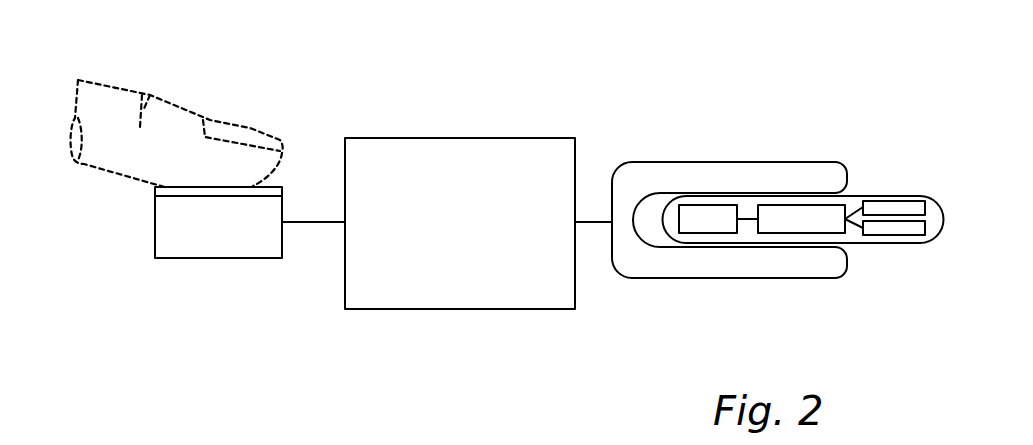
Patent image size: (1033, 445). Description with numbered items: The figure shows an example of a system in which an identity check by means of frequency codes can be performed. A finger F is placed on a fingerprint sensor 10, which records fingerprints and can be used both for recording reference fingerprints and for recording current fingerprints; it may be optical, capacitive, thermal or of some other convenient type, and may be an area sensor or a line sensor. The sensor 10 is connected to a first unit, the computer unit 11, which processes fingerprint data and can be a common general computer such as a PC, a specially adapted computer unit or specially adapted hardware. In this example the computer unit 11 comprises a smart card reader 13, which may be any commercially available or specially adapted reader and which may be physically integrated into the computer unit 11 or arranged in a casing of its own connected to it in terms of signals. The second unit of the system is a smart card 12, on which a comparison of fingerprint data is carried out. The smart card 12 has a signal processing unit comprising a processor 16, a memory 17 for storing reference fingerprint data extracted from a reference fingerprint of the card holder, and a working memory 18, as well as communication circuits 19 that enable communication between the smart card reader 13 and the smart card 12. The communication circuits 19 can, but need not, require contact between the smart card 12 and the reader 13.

The finger F is at (247, 137).
The fingerprint sensor 10 is at (230, 238).
The computer unit 11 is at (523, 153).
The smart card 12 is at (855, 237).
The smart card reader 13 is at (732, 168).
The processor 16 is at (808, 222).
The memory 17 is at (895, 210).
The working memory 18 is at (892, 230).
The communication circuits 19 is at (700, 227).